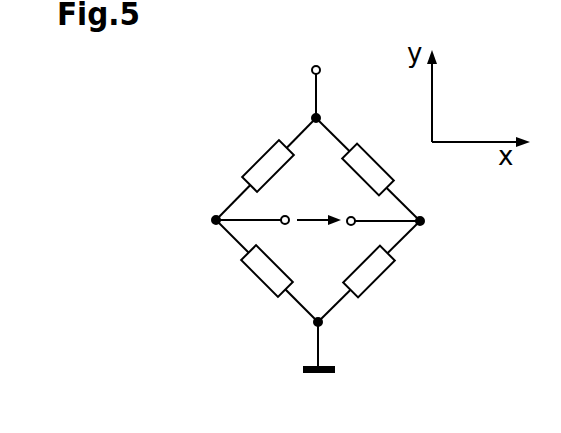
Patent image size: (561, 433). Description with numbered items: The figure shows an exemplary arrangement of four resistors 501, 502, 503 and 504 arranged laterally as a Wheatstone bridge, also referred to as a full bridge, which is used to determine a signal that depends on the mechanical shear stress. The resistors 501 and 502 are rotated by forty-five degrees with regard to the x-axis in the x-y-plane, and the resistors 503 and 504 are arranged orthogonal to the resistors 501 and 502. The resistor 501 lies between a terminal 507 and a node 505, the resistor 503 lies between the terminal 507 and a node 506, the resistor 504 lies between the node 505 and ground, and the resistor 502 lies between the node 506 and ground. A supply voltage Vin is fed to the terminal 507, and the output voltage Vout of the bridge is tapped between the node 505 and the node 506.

The resistor 501 is at (253, 158).
The resistor 502 is at (383, 280).
The resistor 503 is at (379, 162).
The resistor 504 is at (254, 278).
The node 505 is at (304, 204).
The node 506 is at (343, 238).
The terminal 507 is at (317, 54).